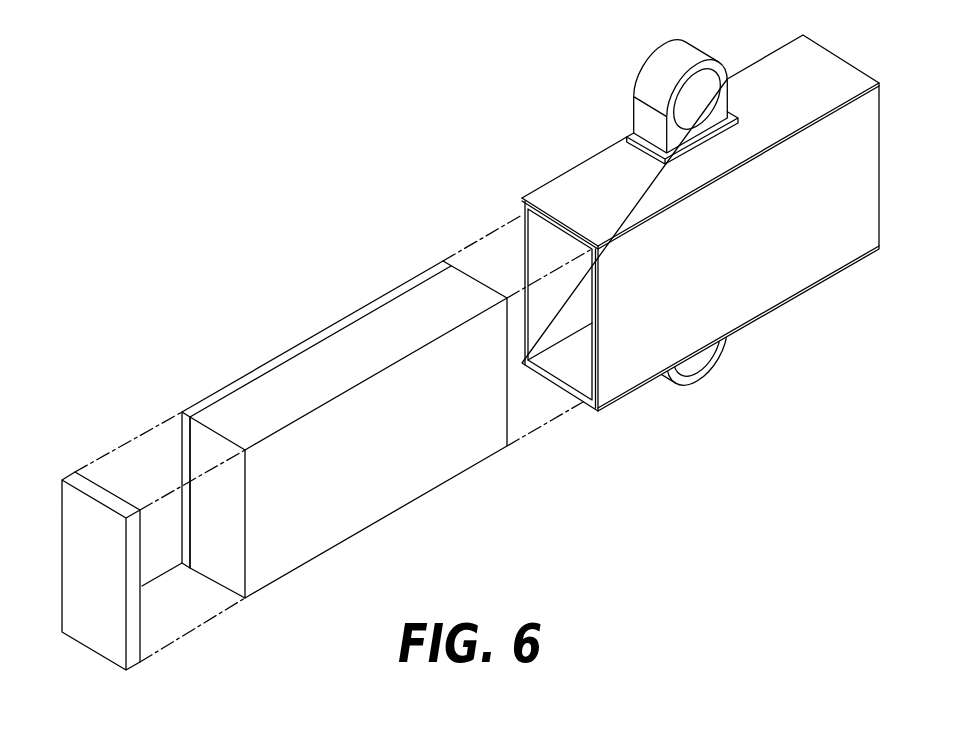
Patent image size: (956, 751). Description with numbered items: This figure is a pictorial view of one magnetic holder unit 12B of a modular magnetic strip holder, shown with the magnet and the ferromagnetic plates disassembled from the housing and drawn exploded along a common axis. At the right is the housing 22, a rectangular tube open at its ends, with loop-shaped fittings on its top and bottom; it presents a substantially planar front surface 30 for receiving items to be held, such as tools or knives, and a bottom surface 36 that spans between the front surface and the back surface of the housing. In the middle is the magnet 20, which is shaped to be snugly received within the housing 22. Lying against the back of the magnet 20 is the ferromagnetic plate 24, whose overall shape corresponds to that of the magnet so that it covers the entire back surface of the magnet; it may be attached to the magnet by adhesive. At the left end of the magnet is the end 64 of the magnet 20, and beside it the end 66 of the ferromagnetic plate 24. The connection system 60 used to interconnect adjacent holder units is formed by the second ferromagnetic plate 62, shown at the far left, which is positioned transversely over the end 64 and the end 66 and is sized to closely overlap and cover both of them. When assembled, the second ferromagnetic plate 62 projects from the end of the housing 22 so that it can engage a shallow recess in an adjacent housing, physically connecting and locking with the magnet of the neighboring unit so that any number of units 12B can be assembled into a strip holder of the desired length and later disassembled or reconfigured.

The magnetic holder unit 12B is at (721, 235).
The housing 22 is at (879, 163).
The front surface 30 is at (735, 252).
The bottom surface 36 is at (654, 381).
The connection system 60 is at (300, 469).
The second ferromagnetic plate 62 is at (98, 571).
The magnet 20 is at (299, 445).
The ferromagnetic plate 24 is at (271, 414).
The end of magnet 64 is at (222, 513).
The end of ferromagnetic plate 66 is at (182, 459).